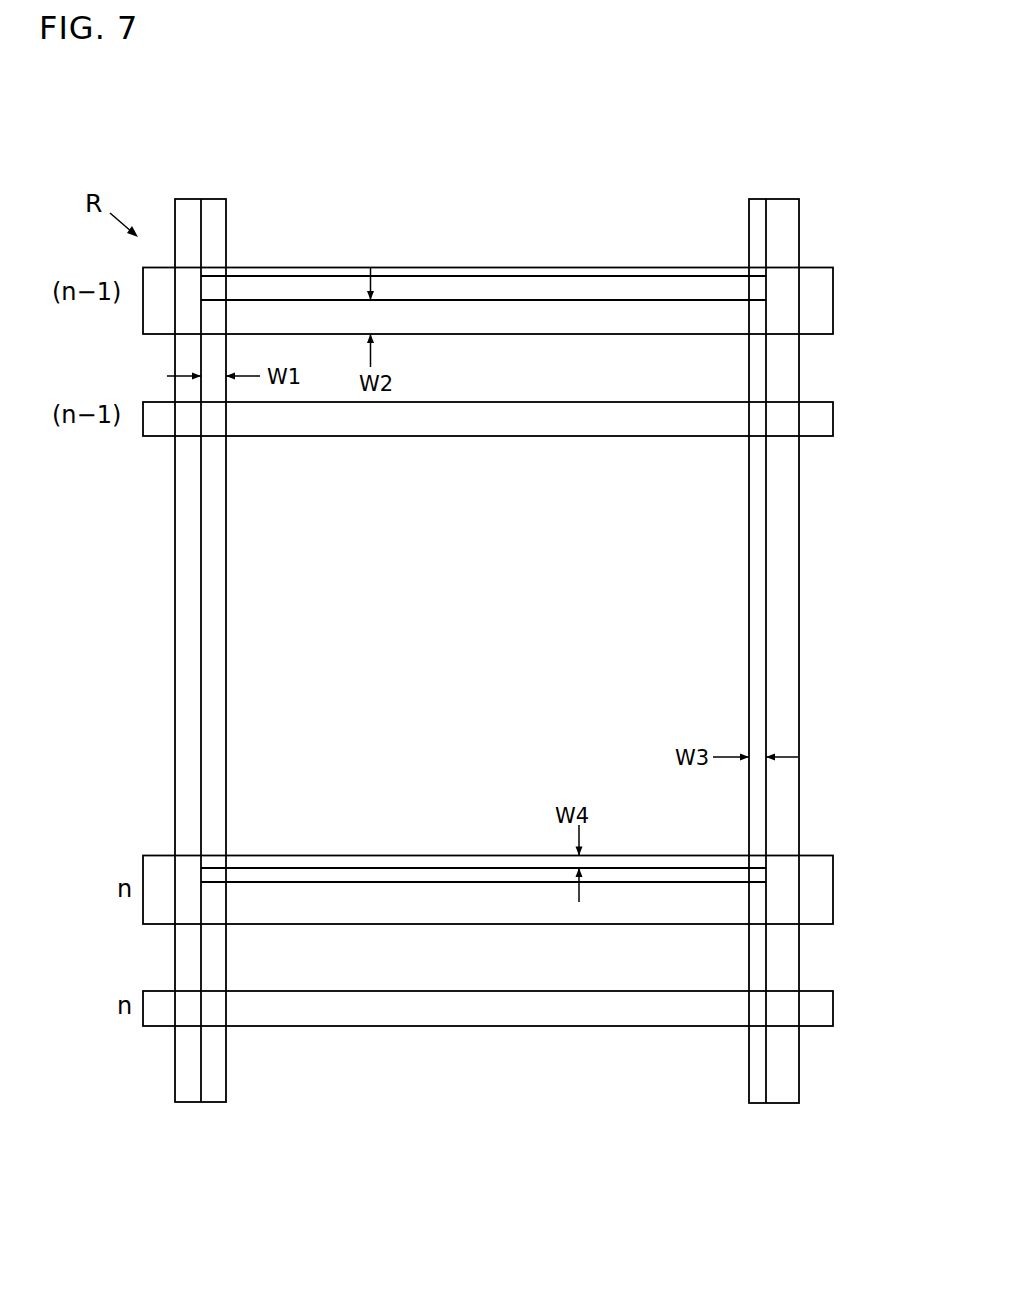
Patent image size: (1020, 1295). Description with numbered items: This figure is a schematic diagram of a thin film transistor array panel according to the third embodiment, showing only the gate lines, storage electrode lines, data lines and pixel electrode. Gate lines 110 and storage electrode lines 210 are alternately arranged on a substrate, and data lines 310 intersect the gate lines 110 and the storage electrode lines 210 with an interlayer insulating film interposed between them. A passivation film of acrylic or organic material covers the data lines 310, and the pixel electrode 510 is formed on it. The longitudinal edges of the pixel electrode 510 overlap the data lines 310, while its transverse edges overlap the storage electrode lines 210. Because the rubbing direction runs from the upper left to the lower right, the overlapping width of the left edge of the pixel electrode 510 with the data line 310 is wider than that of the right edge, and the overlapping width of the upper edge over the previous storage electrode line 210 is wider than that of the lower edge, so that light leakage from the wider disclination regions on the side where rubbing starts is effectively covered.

The gate line 110 is at (833, 419).
The storage electrode line 210 is at (833, 302).
The data line 310 is at (175, 657).
The pixel electrode 510 is at (766, 660).